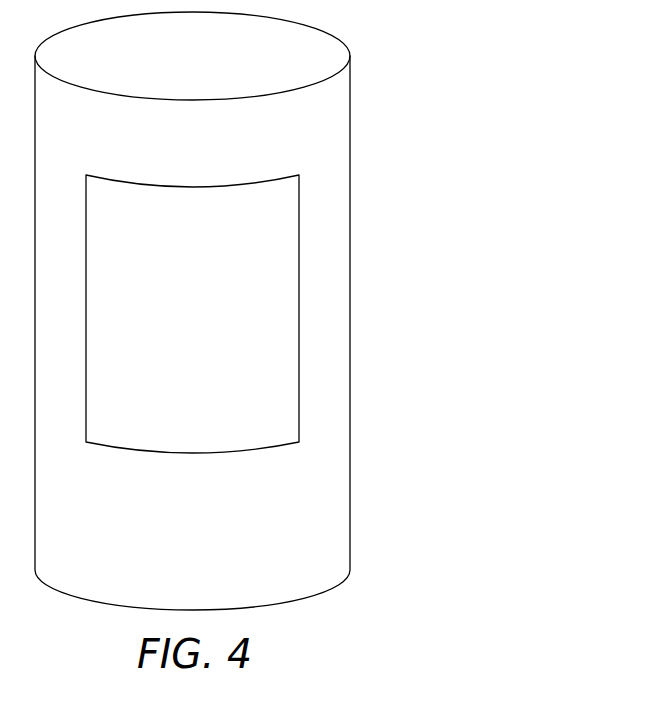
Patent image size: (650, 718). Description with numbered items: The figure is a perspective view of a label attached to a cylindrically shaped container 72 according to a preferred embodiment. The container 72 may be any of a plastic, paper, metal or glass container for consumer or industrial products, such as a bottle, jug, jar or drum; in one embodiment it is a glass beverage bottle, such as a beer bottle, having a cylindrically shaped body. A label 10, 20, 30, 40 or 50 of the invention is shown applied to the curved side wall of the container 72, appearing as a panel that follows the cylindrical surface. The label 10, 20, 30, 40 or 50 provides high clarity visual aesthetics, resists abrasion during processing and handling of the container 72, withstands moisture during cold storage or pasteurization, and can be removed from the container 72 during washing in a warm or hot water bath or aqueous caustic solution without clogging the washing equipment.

The container 72 is at (350, 125).
The label 10 is at (344, 314).
The label 20 is at (344, 314).
The label 30 is at (344, 314).
The label 40 is at (344, 314).
The label 50 is at (299, 275).